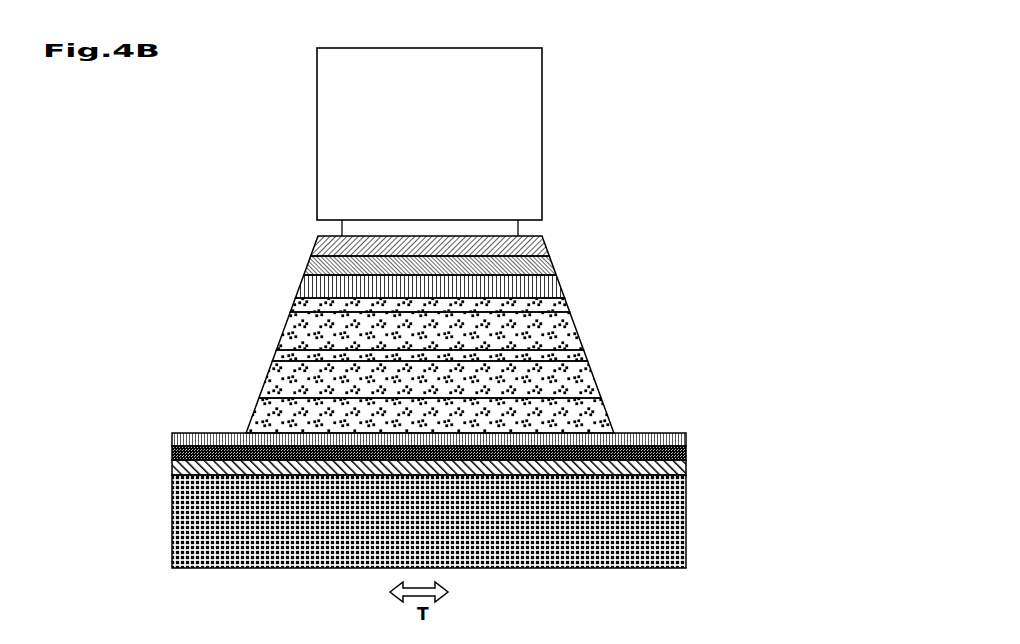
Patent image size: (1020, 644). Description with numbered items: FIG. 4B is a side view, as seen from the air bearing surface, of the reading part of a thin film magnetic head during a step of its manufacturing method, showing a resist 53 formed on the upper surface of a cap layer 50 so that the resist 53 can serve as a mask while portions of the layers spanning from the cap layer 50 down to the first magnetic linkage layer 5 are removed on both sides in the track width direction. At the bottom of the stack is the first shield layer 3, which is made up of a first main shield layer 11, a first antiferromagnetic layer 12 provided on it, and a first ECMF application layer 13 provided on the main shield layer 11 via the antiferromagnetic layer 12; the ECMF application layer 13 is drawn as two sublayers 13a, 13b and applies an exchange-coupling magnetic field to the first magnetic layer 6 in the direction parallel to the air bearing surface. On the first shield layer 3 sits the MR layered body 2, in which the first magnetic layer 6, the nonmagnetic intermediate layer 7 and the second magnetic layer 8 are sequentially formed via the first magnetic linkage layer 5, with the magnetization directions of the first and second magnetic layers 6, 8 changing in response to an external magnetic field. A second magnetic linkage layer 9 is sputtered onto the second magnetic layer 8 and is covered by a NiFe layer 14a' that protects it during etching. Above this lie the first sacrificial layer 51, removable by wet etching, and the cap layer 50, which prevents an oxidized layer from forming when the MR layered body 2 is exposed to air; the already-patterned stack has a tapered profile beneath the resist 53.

The resist 53 is at (528, 124).
The cap layer 50 is at (313, 245).
The first sacrificial layer 51 is at (307, 265).
The NiFe layer 14a' is at (392, 285).
The MR layered body 2 is at (505, 358).
The second magnetic linkage layer 9 is at (565, 304).
The second magnetic layer 8 is at (585, 334).
The nonmagnetic intermediate layer 7 is at (590, 355).
The first magnetic layer 6 is at (600, 385).
The first magnetic linkage layer 5 is at (482, 412).
The first shield layer 3 is at (348, 493).
The first ECMF application layer 13 is at (367, 439).
The upper buffer layer 13b is at (172, 437).
The lower buffer layer 13a is at (172, 452).
The first antiferromagnetic layer 12 is at (172, 470).
The first main shield layer 11 is at (172, 535).